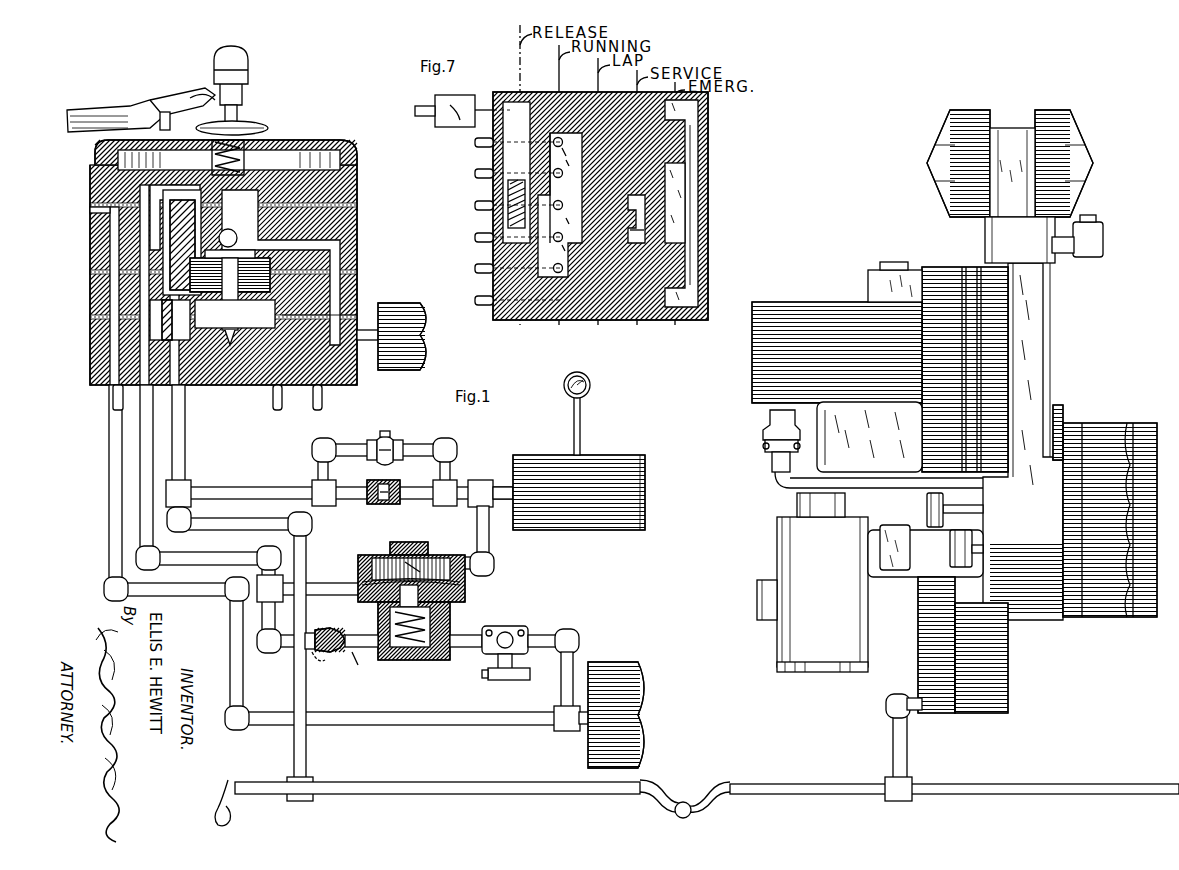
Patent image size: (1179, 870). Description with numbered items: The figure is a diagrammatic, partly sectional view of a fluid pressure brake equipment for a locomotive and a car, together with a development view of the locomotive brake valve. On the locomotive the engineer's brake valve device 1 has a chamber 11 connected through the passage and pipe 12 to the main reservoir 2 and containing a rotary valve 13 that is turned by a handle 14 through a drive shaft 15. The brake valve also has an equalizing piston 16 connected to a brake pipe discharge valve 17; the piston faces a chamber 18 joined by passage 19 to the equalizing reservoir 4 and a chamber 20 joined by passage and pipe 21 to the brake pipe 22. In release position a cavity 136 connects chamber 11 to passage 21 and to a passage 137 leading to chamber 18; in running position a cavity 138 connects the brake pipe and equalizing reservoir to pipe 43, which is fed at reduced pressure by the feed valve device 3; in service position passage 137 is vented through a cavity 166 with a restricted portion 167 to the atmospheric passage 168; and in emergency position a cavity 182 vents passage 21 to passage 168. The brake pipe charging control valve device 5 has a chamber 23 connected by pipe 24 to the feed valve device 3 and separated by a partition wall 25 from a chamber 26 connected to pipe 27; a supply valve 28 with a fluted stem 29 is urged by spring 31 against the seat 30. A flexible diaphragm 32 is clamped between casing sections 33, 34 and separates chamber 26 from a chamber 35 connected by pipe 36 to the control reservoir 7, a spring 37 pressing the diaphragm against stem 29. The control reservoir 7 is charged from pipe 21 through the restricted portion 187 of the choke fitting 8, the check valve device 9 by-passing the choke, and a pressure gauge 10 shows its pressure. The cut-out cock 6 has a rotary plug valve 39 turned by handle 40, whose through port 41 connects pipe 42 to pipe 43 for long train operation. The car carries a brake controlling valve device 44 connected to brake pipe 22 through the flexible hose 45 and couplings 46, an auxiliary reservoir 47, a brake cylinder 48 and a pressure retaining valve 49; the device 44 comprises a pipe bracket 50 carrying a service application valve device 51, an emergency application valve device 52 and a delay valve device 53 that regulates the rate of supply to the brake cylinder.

In FIG. 1, the engineer's brake valve device 1 is at (312, 115).
In FIG. 1, the main reservoir 2 is at (657, 708).
In FIG. 1, the feed valve device 3 is at (543, 627).
In FIG. 1, the equalizing reservoir 4 is at (401, 297).
In FIG. 1, the brake pipe charging control valve device 5 is at (372, 556).
In FIG. 1, the cut-out cock 6 is at (320, 662).
In FIG. 1, the control reservoir 7 is at (531, 449).
In FIG. 1, the choke fitting 8 is at (401, 476).
In FIG. 1, the check valve device 9 is at (402, 434).
In FIG. 1, the pressure gauge 10 is at (597, 385).
In FIG. 7, the chamber 11 is at (445, 128).
In FIG. 1, the chamber 11 is at (325, 160).
In FIG. 7, the passage and pipe 12 is at (422, 118).
In FIG. 1, the passage and pipe 12 is at (105, 233).
In FIG. 7, the rotary valve 13 is at (712, 242).
In FIG. 1, the rotary valve 13 is at (330, 175).
In FIG. 1, the handle 14 is at (84, 106).
In FIG. 1, the drive shaft 15 is at (240, 128).
In FIG. 1, the equalizing piston 16 is at (210, 262).
In FIG. 1, the brake pipe discharge valve 17 is at (232, 345).
In FIG. 1, the chamber 18 is at (237, 242).
In FIG. 1, the passage 19 is at (292, 296).
In FIG. 1, the chamber 20 is at (265, 300).
In FIG. 7, the passage and pipe 21 is at (476, 205).
In FIG. 1, the passage and pipe 21 is at (165, 310).
In FIG. 1, the brake pipe 22 is at (406, 799).
In FIG. 1, the chamber 23 is at (428, 620).
In FIG. 1, the pipe 24 is at (463, 647).
In FIG. 1, the partition wall 25 is at (398, 600).
In FIG. 1, the chamber 26 is at (380, 600).
In FIG. 1, the pipe 27 is at (335, 592).
In FIG. 1, the supply valve 28 is at (440, 612).
In FIG. 1, the fluted stem 29 is at (392, 618).
In FIG. 1, the seat 30 is at (448, 590).
In FIG. 1, the spring 31 is at (415, 650).
In FIG. 1, the flexible diaphragm 32 is at (358, 562).
In FIG. 1, the casing section 33 is at (362, 572).
In FIG. 1, the casing section 34 is at (372, 600).
In FIG. 1, the chamber 35 is at (385, 560).
In FIG. 1, the pipe 36 is at (490, 535).
In FIG. 1, the spring 37 is at (415, 568).
In FIG. 1, the rotary plug valve 39 is at (330, 628).
In FIG. 1, the handle 40 is at (360, 665).
In FIG. 1, the through port 41 is at (330, 652).
In FIG. 1, the pipe 42 is at (380, 648).
In FIG. 7, the pipe 43 is at (476, 142).
In FIG. 1, the pipe 43 is at (133, 255).
In FIG. 1, the brake controlling valve device 44 is at (1018, 654).
In FIG. 1, the flexible hose 45 is at (645, 816).
In FIG. 1, the couplings 46 is at (687, 797).
In FIG. 1, the auxiliary reservoir 47 is at (919, 518).
In FIG. 1, the brake cylinder 48 is at (942, 551).
In FIG. 1, the pressure retaining valve 49 is at (753, 429).
In FIG. 1, the pipe bracket 50 is at (1064, 347).
In FIG. 1, the service application valve device 51 is at (801, 293).
In FIG. 1, the emergency application valve device 52 is at (768, 552).
In FIG. 1, the delay valve device 53 is at (1018, 111).
In FIG. 7, the cavity 136 is at (476, 173).
In FIG. 7, the passage 137 is at (476, 300).
In FIG. 1, the passage 137 is at (200, 229).
In FIG. 7, the cavity 138 is at (476, 237).
In FIG. 1, the cavity 138 is at (165, 195).
In FIG. 7, the cavity 166 is at (640, 200).
In FIG. 7, the restricted portion 167 is at (640, 218).
In FIG. 7, the atmospheric passage 168 is at (476, 268).
In FIG. 1, the atmospheric passage 168 is at (242, 222).
In FIG. 7, the cavity 182 is at (685, 170).
In FIG. 1, the restricted portion 187 is at (390, 505).